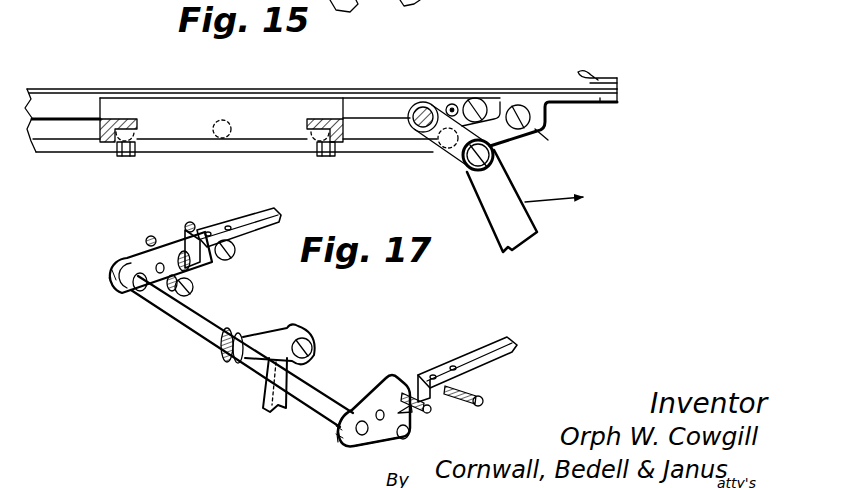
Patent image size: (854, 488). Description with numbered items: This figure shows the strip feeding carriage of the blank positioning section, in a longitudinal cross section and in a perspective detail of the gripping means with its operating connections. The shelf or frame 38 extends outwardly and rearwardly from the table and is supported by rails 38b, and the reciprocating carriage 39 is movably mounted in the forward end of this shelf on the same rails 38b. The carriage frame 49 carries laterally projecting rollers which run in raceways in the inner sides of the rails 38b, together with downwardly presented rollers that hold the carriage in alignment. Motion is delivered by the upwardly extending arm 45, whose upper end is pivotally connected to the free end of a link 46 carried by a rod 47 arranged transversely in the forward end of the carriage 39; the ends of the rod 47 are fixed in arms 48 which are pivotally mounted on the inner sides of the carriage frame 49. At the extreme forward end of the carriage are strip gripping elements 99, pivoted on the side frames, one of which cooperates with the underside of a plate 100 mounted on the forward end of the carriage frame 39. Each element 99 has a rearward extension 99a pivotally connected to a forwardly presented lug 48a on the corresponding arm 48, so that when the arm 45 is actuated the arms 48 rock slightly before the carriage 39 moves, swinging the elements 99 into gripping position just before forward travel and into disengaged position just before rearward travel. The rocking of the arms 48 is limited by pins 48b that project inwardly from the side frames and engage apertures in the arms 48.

In FIG. 15, the shelf or frame 38 is at (537, 8).
In FIG. 15, the rails 38b is at (46, 98).
In FIG. 15, the reciprocating carriage 39 is at (371, 103).
In FIG. 15, the upwardly extending arm 45 is at (525, 232).
In FIG. 17, the upwardly extending arm 45 is at (262, 396).
In FIG. 15, the link 46 is at (463, 152).
In FIG. 17, the link 46 is at (270, 333).
In FIG. 15, the rod 47 is at (420, 124).
In FIG. 17, the rod 47 is at (196, 321).
In FIG. 15, the arms 48 is at (466, 105).
In FIG. 17, the arms 48 is at (120, 260).
In FIG. 17, the forwardly presented lug 48a is at (363, 443).
In FIG. 15, the pins 48b is at (452, 103).
In FIG. 15, the carriage frame 49 is at (179, 104).
In FIG. 15, the strip gripping elements 99 is at (604, 98).
In FIG. 17, the strip gripping elements 99 is at (238, 244).
In FIG. 15, the rearward extensions 99a is at (535, 127).
In FIG. 17, the rearward extensions 99a is at (205, 272).
In FIG. 15, the plate 100 is at (606, 82).